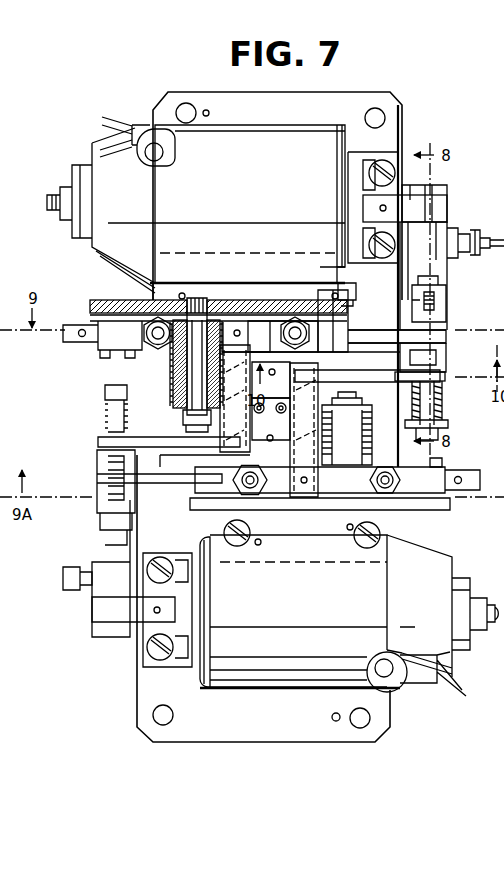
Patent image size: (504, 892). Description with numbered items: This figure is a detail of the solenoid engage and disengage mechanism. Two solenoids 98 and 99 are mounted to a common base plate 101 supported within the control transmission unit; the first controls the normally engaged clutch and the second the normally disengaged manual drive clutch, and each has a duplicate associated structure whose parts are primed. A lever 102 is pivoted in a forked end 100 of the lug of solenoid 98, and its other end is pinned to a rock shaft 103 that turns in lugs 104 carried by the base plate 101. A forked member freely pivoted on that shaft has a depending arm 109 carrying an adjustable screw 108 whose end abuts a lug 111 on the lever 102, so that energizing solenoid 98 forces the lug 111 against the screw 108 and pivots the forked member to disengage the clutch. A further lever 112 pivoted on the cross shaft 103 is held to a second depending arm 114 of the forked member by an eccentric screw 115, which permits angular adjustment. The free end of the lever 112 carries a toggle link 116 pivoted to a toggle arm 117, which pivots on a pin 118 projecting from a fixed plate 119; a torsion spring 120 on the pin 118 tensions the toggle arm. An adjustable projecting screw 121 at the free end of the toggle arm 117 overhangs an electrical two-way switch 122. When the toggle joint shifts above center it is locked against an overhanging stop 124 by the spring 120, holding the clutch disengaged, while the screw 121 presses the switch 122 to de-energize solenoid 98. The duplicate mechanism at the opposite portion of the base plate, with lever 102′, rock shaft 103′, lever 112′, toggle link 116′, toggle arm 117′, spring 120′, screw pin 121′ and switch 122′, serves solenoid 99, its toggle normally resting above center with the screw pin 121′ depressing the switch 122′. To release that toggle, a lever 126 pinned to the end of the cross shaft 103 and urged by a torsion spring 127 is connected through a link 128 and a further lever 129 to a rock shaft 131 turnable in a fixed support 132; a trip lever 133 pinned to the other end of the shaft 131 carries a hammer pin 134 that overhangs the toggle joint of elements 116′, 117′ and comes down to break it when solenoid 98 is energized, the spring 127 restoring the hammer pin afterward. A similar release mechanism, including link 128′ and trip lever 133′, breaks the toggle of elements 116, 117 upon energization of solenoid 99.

The solenoid 98 is at (242, 189).
The solenoid 99 is at (281, 603).
The forked end 100 is at (364, 205).
The base plate 101 is at (244, 743).
The lever 102 is at (445, 210).
The lever 102′ is at (92, 610).
The rock shaft 103 is at (440, 428).
The rock shaft 103′ is at (104, 392).
The lugs 104 is at (442, 190).
The adjustable screw 108 is at (492, 242).
The depending arm 109 is at (440, 248).
The lug 111 is at (423, 276).
The lever 112 is at (447, 340).
The lever 112′ is at (97, 488).
The second depending arm 114 is at (447, 318).
The eccentric screw 115 is at (447, 362).
The toggle link 116 is at (362, 340).
The toggle link 116′ is at (168, 478).
The toggle arm 117 is at (228, 300).
The toggle arm 117′ is at (320, 488).
The pin 118 is at (196, 428).
The fixed plate 119 is at (213, 300).
The torsion spring 120 is at (172, 385).
The torsion spring 120′ is at (378, 440).
The adjustable projecting screw 121 is at (128, 305).
The screw pin 121′ is at (395, 480).
The two-way switch 122 is at (130, 345).
The two-way switch 122′ is at (445, 474).
The overhanging stop 124 is at (342, 328).
The lever 126 is at (445, 379).
The torsion spring 127 is at (443, 400).
The link 128 is at (340, 380).
The link 128′ is at (98, 442).
The lever 129 is at (285, 383).
The rock shaft 131 is at (306, 503).
The fixed support 132 is at (272, 410).
The trip lever 133 is at (262, 505).
The trip lever 133′ is at (270, 330).
The hammer pin 134 is at (350, 292).